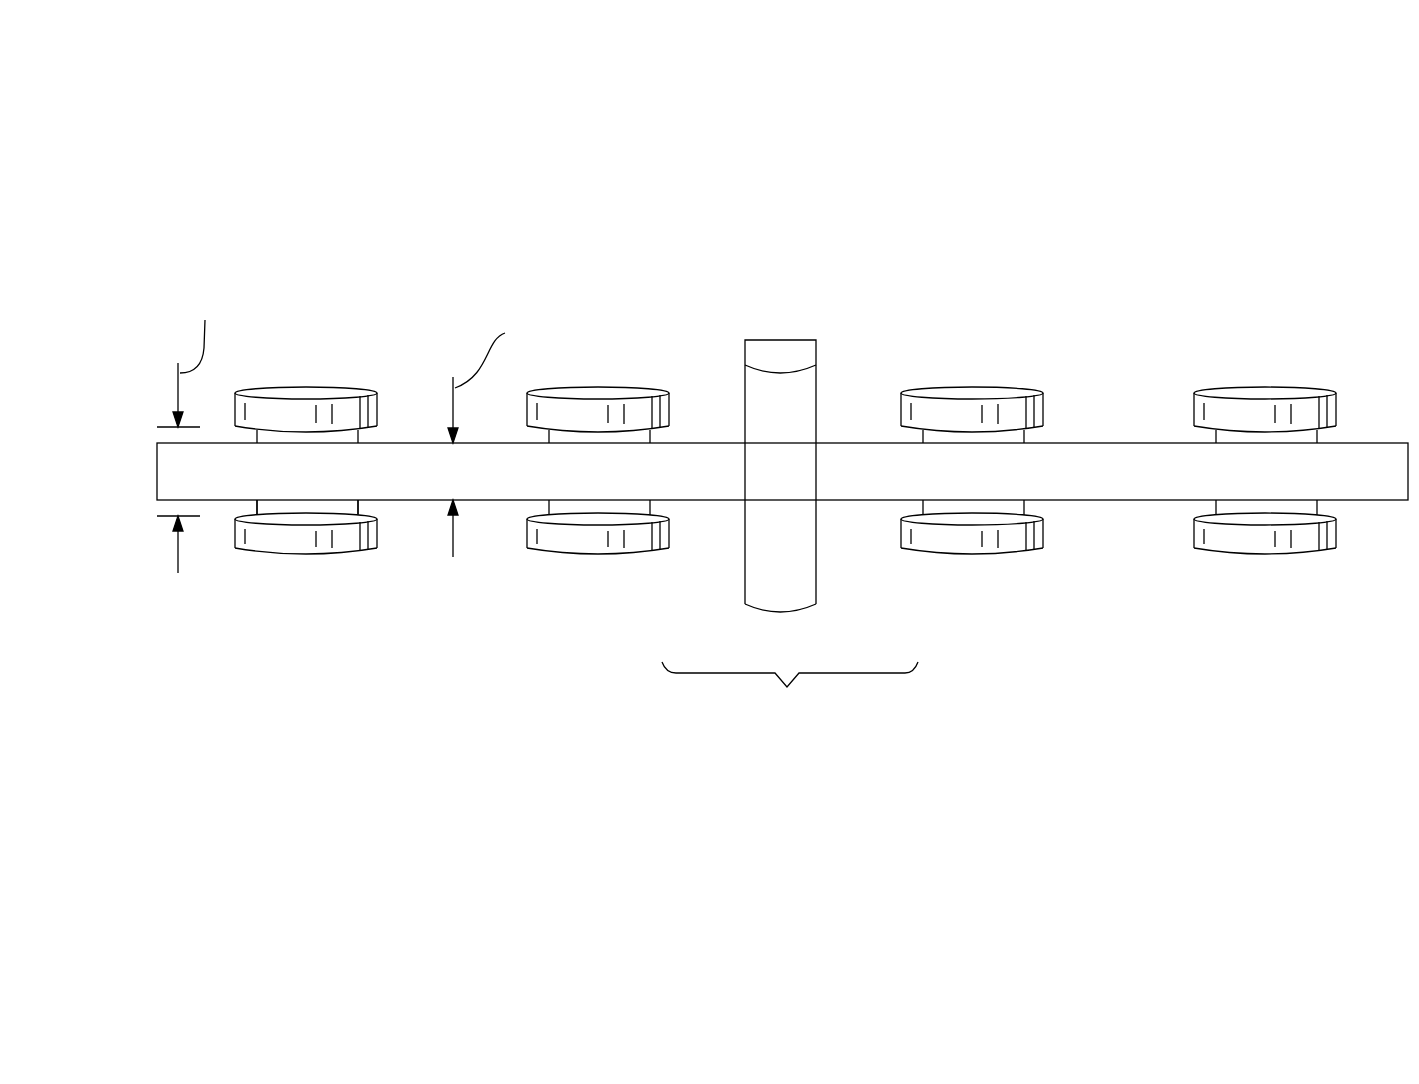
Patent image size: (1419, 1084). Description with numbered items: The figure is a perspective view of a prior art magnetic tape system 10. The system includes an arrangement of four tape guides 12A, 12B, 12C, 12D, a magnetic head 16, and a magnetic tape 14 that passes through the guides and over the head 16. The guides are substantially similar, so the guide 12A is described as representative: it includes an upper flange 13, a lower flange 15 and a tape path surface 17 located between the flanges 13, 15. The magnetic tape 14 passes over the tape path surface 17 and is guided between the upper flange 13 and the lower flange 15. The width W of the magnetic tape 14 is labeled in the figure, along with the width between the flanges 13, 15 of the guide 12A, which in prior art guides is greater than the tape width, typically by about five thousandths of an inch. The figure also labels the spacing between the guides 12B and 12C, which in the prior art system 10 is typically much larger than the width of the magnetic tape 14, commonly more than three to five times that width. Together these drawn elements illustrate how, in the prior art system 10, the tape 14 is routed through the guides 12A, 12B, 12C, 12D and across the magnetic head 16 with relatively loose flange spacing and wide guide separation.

The magnetic tape system 10 is at (930, 211).
The tape guide 12A is at (335, 467).
The tape guide 12B is at (598, 393).
The tape guide 12C is at (970, 390).
The tape guide 12D is at (1243, 390).
The upper flange 13 is at (333, 398).
The magnetic tape 14 is at (498, 477).
The lower flange 15 is at (297, 532).
The magnetic head 16 is at (777, 355).
The tape path surface 17 is at (355, 504).